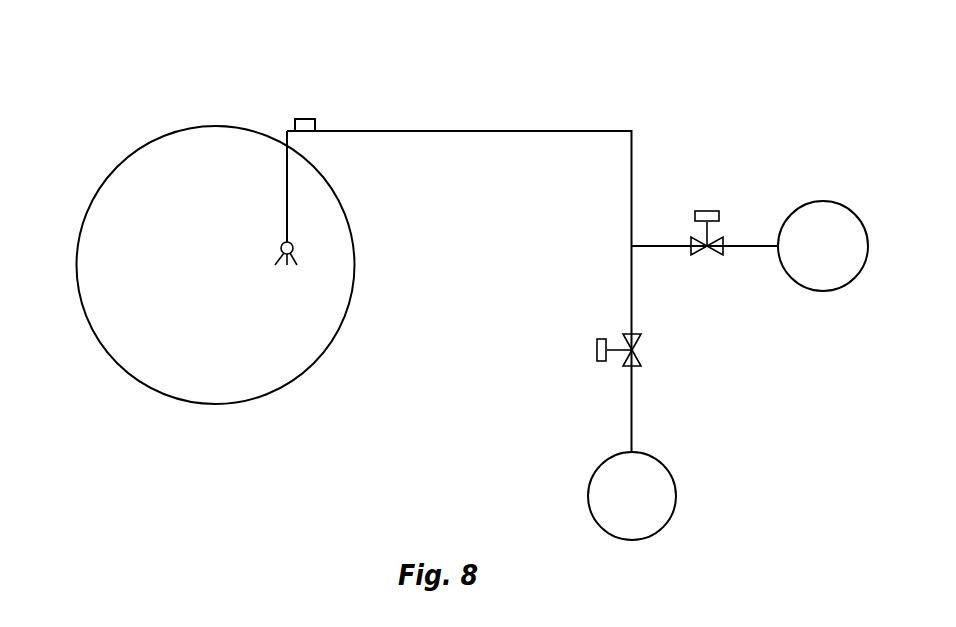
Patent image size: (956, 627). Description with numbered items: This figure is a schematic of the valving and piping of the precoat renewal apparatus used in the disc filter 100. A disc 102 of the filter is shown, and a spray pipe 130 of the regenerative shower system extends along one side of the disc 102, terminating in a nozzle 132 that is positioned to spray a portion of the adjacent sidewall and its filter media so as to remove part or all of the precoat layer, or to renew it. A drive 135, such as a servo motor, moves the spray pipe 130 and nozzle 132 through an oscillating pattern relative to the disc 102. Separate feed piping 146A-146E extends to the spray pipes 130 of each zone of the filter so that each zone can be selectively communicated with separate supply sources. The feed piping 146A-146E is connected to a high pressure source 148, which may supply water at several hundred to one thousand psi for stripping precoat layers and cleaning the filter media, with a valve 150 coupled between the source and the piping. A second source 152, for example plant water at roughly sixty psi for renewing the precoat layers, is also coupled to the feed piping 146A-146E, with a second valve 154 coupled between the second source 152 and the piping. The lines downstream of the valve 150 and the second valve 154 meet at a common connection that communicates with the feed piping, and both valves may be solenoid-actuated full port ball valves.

The disc filter 100 is at (104, 116).
The disc 102 is at (85, 212).
The spray pipe 130 is at (286, 184).
The nozzle 132 is at (293, 243).
The drive 135 is at (312, 118).
The feed piping 146A-146E is at (430, 130).
The high pressure source 148 is at (824, 202).
The valve 150 is at (719, 236).
The second source 152 is at (590, 478).
The second valve 154 is at (642, 355).